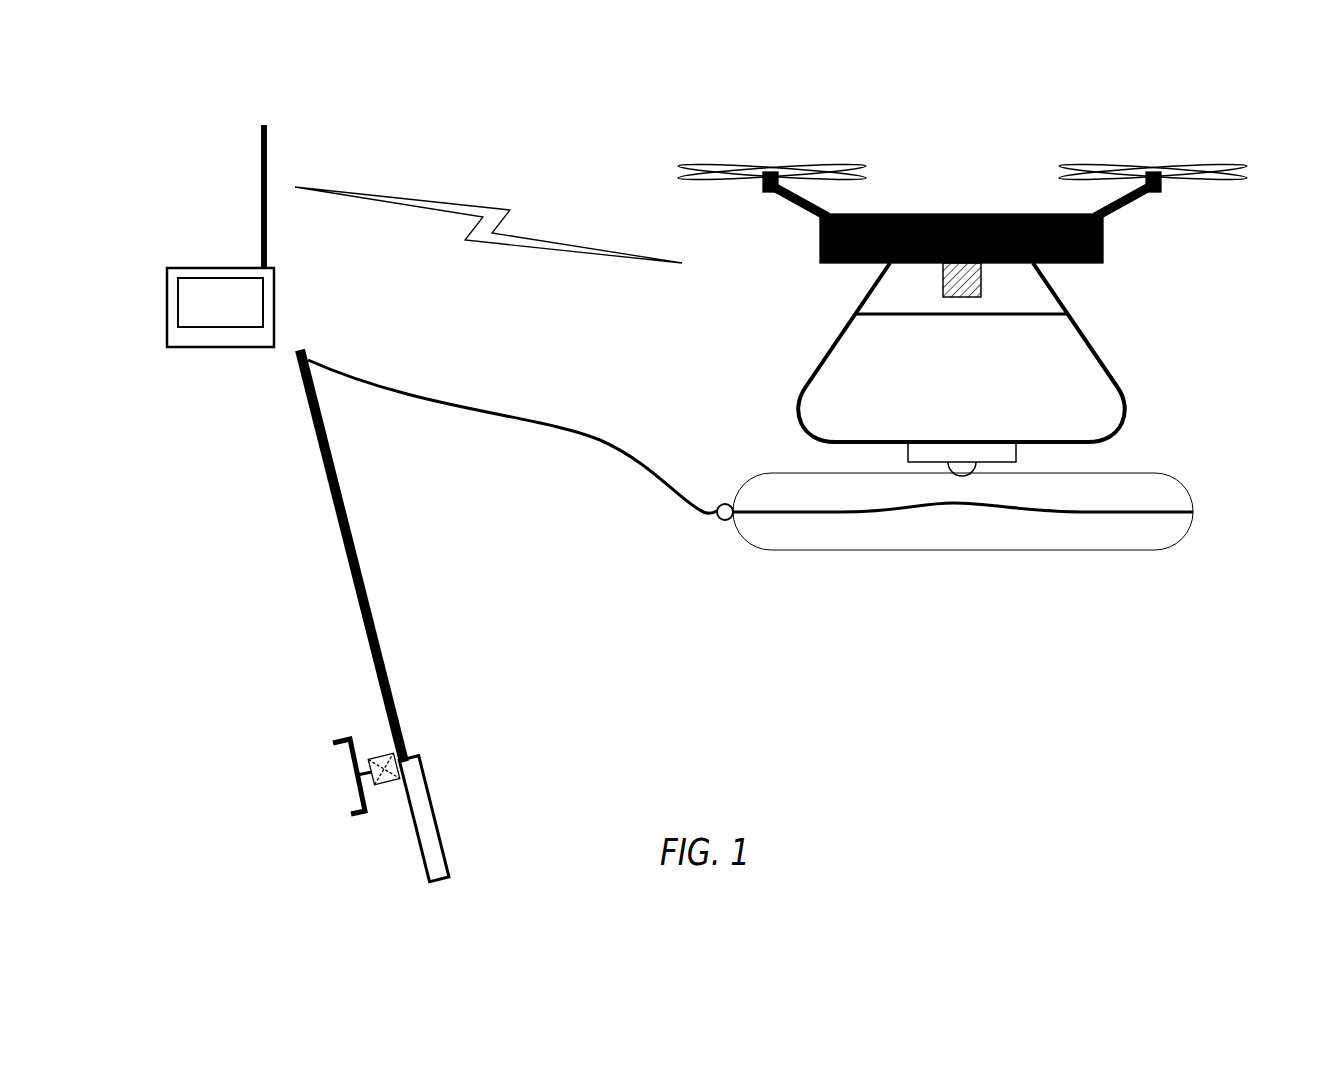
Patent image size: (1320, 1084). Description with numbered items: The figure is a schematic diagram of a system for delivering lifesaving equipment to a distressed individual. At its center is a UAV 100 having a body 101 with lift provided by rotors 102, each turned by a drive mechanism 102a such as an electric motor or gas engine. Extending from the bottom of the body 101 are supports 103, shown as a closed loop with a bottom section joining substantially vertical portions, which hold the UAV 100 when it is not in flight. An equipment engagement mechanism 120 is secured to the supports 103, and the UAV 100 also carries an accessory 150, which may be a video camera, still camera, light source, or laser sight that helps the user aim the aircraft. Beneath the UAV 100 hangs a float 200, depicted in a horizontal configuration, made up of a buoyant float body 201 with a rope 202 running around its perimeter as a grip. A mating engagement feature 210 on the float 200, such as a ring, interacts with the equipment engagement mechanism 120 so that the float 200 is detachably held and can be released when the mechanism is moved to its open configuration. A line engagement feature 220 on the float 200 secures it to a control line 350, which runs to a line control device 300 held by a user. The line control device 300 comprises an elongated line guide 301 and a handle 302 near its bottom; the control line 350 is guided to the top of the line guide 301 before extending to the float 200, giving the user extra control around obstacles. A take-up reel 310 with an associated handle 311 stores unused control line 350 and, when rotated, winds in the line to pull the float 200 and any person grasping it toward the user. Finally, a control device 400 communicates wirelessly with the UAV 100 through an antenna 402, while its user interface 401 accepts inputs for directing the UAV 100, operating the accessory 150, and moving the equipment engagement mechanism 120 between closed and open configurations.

The UAV 100 is at (962, 293).
The body 101 is at (1105, 240).
The rotors 102 is at (1062, 163).
The drive mechanisms 102a is at (765, 195).
The supports 103 is at (818, 370).
The equipment engagement mechanism 120 is at (935, 442).
The accessories 150 is at (963, 297).
The float 200 is at (924, 559).
The float body 201 is at (1153, 550).
The rope 202 is at (875, 512).
The mating engagement feature 210 is at (963, 476).
The line engagement feature 220 is at (720, 522).
The line control device 300 is at (380, 629).
The line guide 301 is at (335, 517).
The handle 302 is at (427, 795).
The take-up reel 310 is at (380, 783).
The handle 311 is at (342, 748).
The control line 350 is at (592, 437).
The control device 400 is at (424, 229).
The user interface 401 is at (263, 307).
The antenna 402 is at (262, 208).